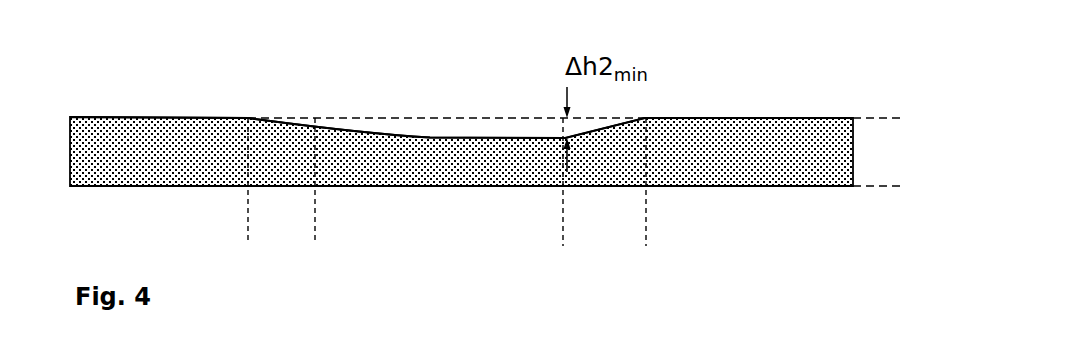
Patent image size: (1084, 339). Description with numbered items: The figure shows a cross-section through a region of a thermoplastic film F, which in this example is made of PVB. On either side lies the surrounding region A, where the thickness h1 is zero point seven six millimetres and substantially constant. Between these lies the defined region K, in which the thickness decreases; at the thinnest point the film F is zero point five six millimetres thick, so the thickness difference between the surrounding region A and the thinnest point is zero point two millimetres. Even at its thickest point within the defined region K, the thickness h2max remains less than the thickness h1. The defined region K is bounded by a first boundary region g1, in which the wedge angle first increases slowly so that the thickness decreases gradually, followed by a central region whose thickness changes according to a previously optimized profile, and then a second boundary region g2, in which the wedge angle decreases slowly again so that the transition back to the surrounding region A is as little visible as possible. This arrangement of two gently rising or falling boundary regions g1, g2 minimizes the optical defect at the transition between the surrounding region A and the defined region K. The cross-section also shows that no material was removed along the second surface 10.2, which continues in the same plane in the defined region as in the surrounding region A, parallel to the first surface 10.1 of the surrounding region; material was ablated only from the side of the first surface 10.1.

The first surface 10.1 is at (725, 110).
The second surface 10.2 is at (749, 195).
The thermoplastic film F is at (204, 114).
The surrounding region A is at (240, 222).
The defined region K is at (638, 212).
The first boundary region g1 is at (307, 234).
The second boundary region g2 is at (638, 236).
The thickness in the surrounding region h1 is at (899, 220).
The maximum thickness in the defined region h2max is at (646, 126).